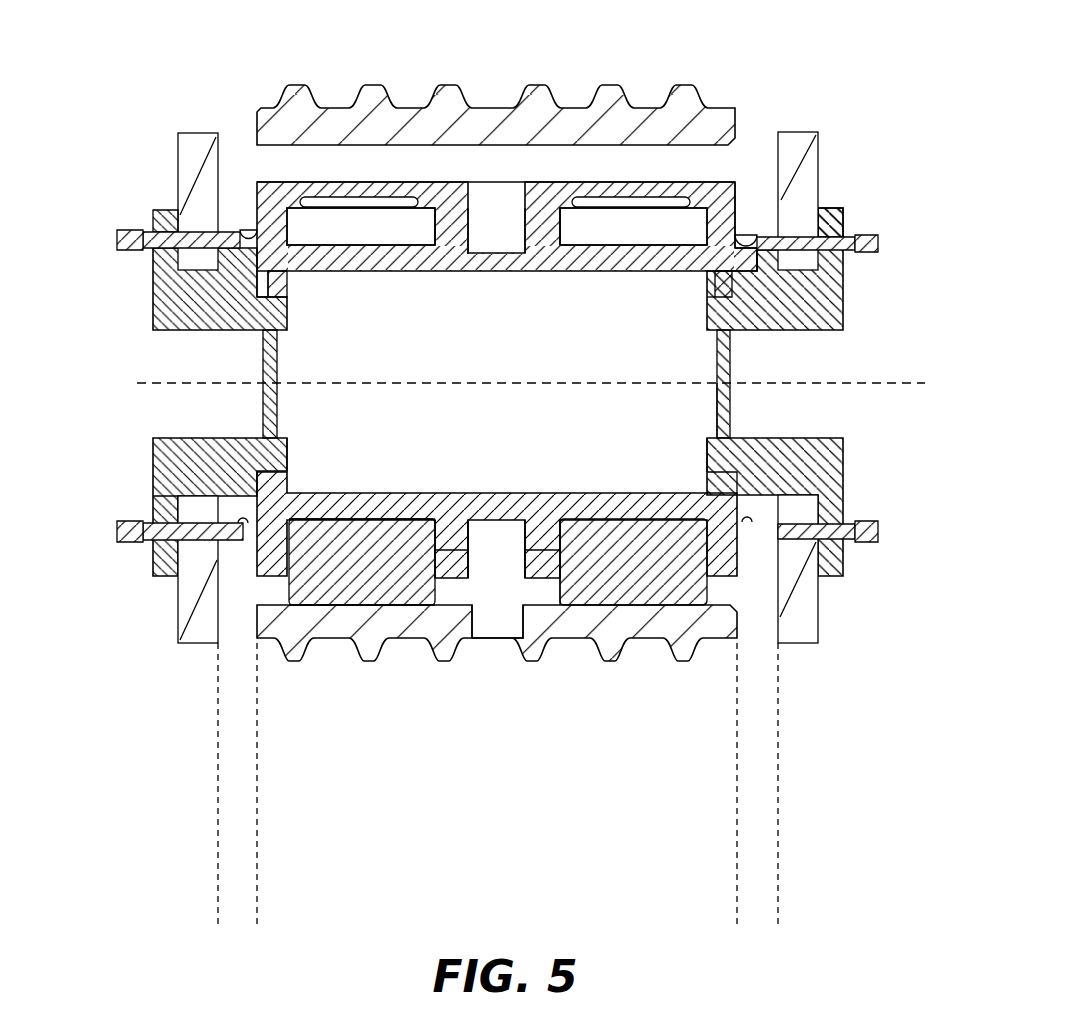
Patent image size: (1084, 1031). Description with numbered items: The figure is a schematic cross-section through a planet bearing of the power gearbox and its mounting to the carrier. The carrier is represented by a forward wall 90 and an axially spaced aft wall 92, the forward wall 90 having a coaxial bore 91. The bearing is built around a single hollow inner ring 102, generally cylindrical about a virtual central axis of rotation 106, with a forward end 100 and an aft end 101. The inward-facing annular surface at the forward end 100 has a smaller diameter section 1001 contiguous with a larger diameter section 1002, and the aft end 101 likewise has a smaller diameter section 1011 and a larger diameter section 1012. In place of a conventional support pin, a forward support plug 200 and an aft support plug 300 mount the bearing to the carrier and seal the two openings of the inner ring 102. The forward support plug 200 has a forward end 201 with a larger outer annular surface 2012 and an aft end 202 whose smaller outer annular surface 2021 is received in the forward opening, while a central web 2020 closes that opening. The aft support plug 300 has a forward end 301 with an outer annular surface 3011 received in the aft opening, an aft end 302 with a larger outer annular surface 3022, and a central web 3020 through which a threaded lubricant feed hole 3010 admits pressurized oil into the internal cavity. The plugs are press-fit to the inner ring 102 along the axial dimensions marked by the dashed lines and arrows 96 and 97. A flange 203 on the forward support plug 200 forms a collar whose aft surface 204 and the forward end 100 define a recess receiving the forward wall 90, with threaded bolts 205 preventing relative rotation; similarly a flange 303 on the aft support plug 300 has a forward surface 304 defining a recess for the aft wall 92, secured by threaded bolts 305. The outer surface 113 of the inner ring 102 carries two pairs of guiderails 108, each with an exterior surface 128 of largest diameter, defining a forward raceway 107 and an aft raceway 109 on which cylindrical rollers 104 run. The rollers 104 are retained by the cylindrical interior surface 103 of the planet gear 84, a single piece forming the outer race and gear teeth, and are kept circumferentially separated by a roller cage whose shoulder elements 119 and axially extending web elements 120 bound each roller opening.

The planet gear 84 is at (735, 110).
The forward wall 90 is at (195, 140).
The aft wall 92 is at (805, 154).
The forward press-fit interface dimension 96 is at (216, 842).
The aft press-fit interface dimension 97 is at (734, 842).
The forward end 100 is at (484, 358).
The aft end 101 is at (752, 214).
The inner ring 102 is at (497, 465).
The cylindrical interior surface 103 is at (447, 598).
The rollers 104 is at (365, 230).
The virtual central axis of rotation 106 is at (160, 383).
The forward raceway 107 is at (383, 532).
The guiderails 108 is at (537, 240).
The aft raceway 109 is at (573, 533).
The outer surface 113 is at (494, 538).
The shoulder elements 119 is at (447, 605).
The web elements 120 is at (637, 186).
The exterior surface 128 is at (547, 208).
The forward support plug 200 is at (224, 412).
The forward end 201 is at (160, 456).
The aft end 202 is at (288, 452).
The flange 203 is at (170, 218).
The aft surface 204 is at (178, 234).
The threaded bolts 205 is at (128, 233).
The aft support plug 300 is at (770, 368).
The forward end 301 is at (712, 457).
The aft end 302 is at (840, 456).
The flange 303 is at (843, 209).
The forward surface 304 is at (808, 214).
The threaded bolts 305 is at (878, 243).
The coaxial bore 91 is at (200, 492).
The smaller diameter section 1001 is at (272, 304).
The larger diameter section 1002 is at (245, 290).
The smaller diameter section 1011 is at (713, 298).
The larger diameter section 1012 is at (760, 272).
The outer annular surface 2012 is at (245, 262).
The central web 2020 is at (270, 418).
The outer annular surface 2021 is at (275, 292).
The lubricant feed hole 3010 is at (722, 396).
The outer annular surface 3011 is at (720, 312).
The central web 3020 is at (722, 352).
The outer annular surface 3022 is at (745, 265).